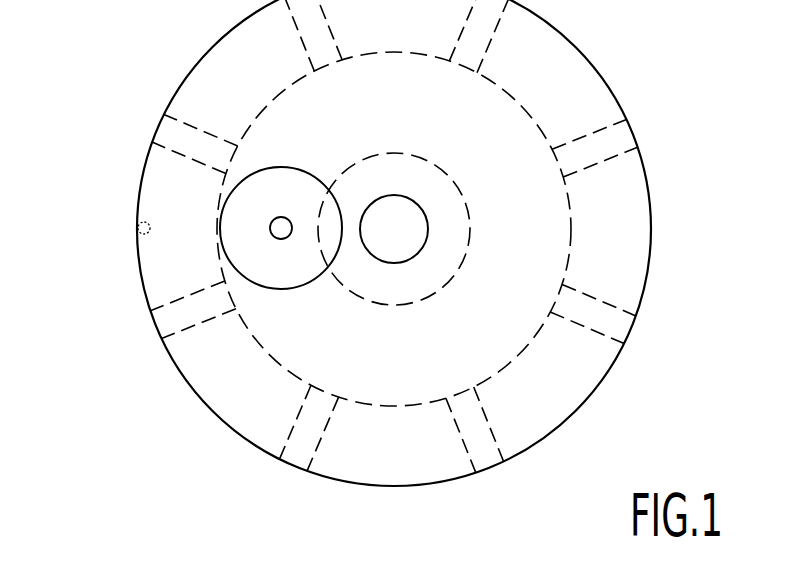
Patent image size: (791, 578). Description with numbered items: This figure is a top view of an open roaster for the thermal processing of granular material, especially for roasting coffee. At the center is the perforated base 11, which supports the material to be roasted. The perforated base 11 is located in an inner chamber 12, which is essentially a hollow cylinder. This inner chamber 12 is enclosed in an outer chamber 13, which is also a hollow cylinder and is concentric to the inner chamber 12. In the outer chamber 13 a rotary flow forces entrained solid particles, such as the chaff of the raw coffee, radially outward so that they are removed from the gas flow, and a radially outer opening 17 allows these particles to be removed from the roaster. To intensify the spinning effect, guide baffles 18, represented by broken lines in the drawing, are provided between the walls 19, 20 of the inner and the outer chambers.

The perforated base 11 is at (278, 128).
The inner chamber 12 is at (540, 205).
The outer chamber 13 is at (578, 72).
The radially outer opening 17 is at (140, 232).
The guide baffles 18 is at (290, 461).
The wall of the inner chamber 19 is at (378, 409).
The wall of the outer chamber 20 is at (410, 488).